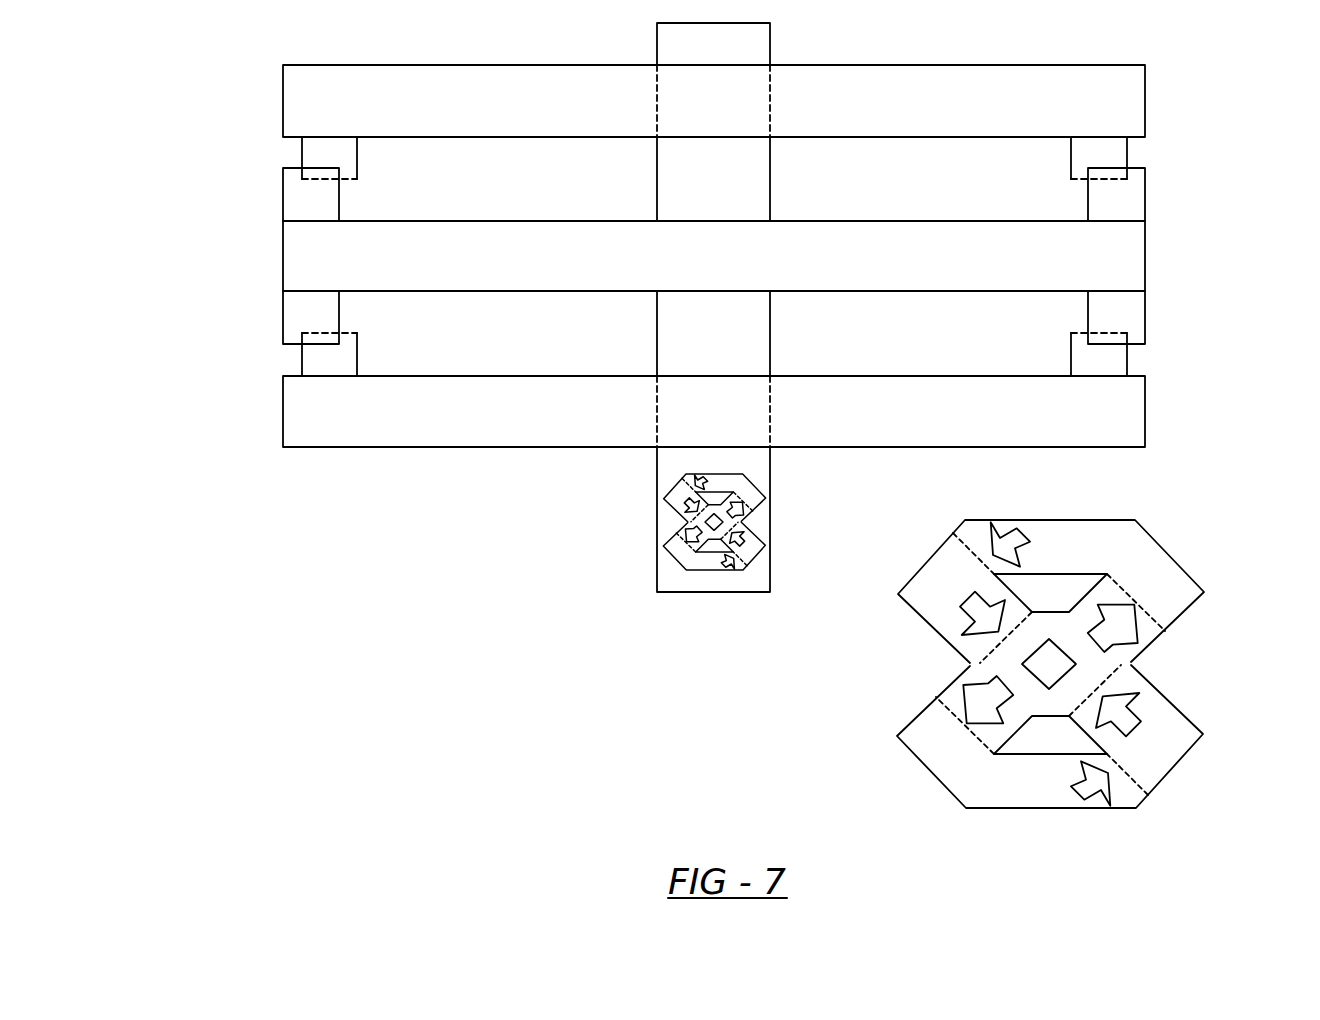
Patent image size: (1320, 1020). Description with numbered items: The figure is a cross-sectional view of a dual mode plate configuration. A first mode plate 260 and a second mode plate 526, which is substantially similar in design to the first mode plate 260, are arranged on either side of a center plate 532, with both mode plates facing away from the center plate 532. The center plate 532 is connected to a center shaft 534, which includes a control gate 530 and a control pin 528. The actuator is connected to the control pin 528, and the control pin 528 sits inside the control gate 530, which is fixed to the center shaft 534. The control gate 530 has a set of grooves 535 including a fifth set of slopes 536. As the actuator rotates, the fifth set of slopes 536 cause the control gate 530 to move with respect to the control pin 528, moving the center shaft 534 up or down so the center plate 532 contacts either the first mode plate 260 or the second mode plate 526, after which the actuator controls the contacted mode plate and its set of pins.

The second mode plate 526 is at (283, 103).
The center plate 532 is at (283, 258).
The first mode plate 260 is at (283, 413).
The center shaft 534 is at (657, 180).
The set of grooves 535 is at (1150, 575).
The control gate 530 is at (938, 777).
The control pin 528 is at (1022, 664).
The fifth set of slopes 536 is at (990, 548).